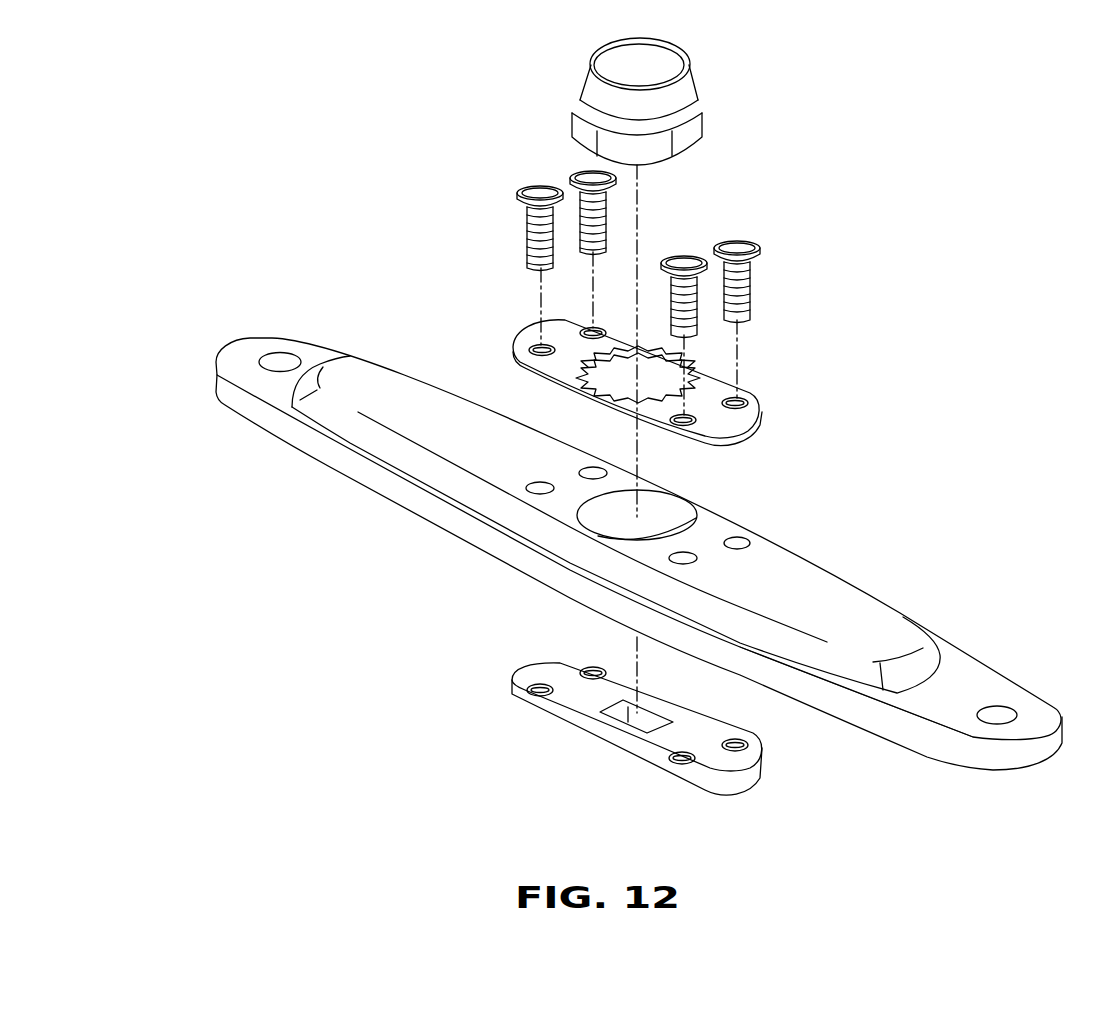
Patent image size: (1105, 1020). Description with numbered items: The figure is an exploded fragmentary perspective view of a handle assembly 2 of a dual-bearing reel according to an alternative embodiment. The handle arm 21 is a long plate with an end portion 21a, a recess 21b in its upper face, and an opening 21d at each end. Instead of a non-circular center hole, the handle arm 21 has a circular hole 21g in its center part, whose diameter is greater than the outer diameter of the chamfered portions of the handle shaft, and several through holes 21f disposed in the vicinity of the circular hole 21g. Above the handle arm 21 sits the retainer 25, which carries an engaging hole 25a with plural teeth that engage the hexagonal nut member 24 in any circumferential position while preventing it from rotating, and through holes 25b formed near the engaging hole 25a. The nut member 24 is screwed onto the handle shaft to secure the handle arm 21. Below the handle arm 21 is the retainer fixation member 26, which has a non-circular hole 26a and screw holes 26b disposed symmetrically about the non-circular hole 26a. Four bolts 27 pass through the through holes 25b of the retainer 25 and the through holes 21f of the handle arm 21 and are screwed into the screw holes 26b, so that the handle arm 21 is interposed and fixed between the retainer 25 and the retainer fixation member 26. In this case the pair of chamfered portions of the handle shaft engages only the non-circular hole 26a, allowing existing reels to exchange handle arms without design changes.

The handle assembly 2 is at (889, 253).
The handle arm 21 is at (1000, 517).
The arm end portion 21a is at (970, 677).
The recess 21b is at (847, 607).
The mounting hole 21d is at (275, 363).
The through hole 21f is at (540, 490).
The circular hole 21g is at (683, 513).
The nut member 24 is at (668, 67).
The retainer 25 is at (746, 383).
The engaging hole 25a is at (576, 379).
The through hole 25b is at (588, 333).
The retainer fixation member 26 is at (565, 726).
The non-circular hole 26a is at (617, 712).
The screw holes 26b is at (537, 697).
The bolt 27 is at (585, 176).